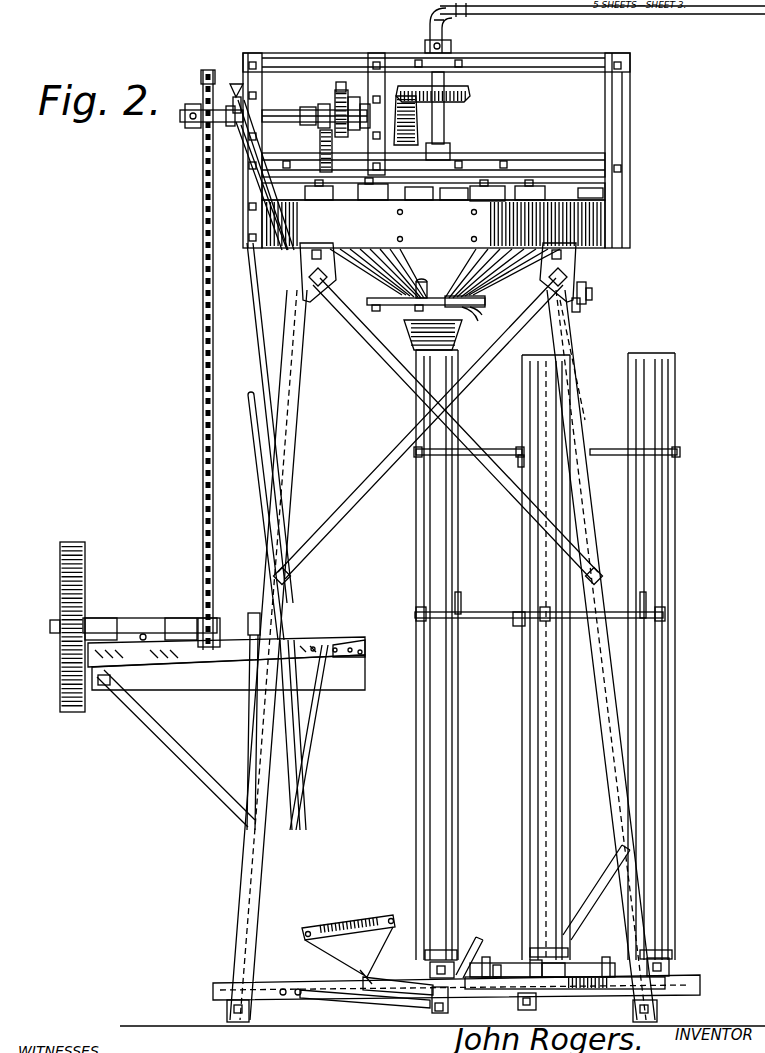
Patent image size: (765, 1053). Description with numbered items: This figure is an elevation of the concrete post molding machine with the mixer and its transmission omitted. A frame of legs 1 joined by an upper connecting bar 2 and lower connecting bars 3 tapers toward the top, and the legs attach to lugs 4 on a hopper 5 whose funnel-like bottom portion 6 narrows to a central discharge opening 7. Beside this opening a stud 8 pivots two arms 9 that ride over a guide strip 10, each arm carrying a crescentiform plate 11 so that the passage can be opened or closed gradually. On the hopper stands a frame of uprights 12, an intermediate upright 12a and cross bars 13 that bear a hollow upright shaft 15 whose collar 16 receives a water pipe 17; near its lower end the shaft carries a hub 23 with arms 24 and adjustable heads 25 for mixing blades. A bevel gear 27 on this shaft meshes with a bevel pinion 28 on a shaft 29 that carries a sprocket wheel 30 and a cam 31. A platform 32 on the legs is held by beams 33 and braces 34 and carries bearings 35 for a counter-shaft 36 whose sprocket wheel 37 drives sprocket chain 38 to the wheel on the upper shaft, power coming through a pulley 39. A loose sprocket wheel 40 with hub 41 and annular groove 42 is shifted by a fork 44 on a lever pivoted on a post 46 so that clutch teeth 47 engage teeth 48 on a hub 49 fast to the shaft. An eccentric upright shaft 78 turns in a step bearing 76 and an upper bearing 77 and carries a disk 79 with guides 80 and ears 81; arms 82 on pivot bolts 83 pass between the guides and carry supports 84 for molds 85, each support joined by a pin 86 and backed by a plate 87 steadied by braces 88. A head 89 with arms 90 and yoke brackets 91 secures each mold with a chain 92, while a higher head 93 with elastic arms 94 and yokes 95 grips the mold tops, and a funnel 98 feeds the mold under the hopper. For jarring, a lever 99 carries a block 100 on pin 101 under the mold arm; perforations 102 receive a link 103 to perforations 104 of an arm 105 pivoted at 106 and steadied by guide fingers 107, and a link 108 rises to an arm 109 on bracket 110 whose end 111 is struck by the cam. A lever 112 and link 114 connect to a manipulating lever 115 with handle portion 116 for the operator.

The legs 1 is at (250, 897).
The connecting bar 2 is at (592, 292).
The connecting bar 3 is at (337, 1013).
The lugs 4 is at (438, 263).
The hopper 5 is at (433, 224).
The bottom portion 6 is at (445, 273).
The central discharge opening 7 is at (437, 297).
The stud 8 is at (485, 301).
The arms 9 is at (396, 319).
The guide strip 10 is at (438, 431).
The crescentiform plate 11 is at (480, 322).
The uprights 12 is at (251, 60).
The intermediate upright 12a is at (376, 60).
The cross bars 13 is at (549, 62).
The upright shaft 15 is at (445, 127).
The collar 16 is at (452, 47).
The pipe 17 is at (612, 16).
The hub 23 is at (448, 207).
The arms 24 is at (345, 190).
The heads 25 is at (325, 198).
The bevel gear 27 is at (470, 98).
The bevel pinion 28 is at (408, 126).
The shaft 29 is at (186, 112).
The sprocket wheel 30 is at (203, 74).
The cam 31 is at (235, 138).
The platform 32 is at (173, 665).
The bars or beams 33 is at (210, 681).
The braces 34 is at (200, 787).
The bearings 35 is at (177, 620).
The counter-shaft 36 is at (50, 627).
The sprocket wheel 37 is at (213, 620).
The sprocket chain 38 is at (203, 498).
The pulley 39 is at (68, 593).
The sprocket wheel 40 is at (338, 82).
The hub 41 is at (322, 116).
The annular groove 42 is at (310, 124).
The fork 44 is at (323, 104).
The post 46 is at (319, 148).
The clutch teeth 47 is at (346, 108).
The clutch teeth 48 is at (354, 126).
The hub 49 is at (368, 108).
The step bearing 76 is at (552, 1004).
The bearing 77 is at (580, 304).
The upright shaft 78 is at (560, 338).
The disk 79 is at (678, 990).
The guides 80 is at (544, 953).
The ears 81 is at (563, 960).
The arm 82 is at (495, 965).
The pivot pin or bolt 83 is at (532, 963).
The support 84 is at (428, 953).
The mold 85 is at (420, 740).
The pivot pin or bolt 86 is at (430, 969).
The guide and supporting plate 87 is at (455, 723).
The braces 88 is at (467, 957).
The head 89 is at (518, 626).
The arms 90 is at (487, 612).
The yoke brackets 91 is at (461, 602).
The chain 92 is at (422, 607).
The head 93 is at (514, 465).
The arms 94 is at (500, 449).
The yoke 95 is at (520, 448).
The funnel 98 is at (433, 335).
The lever 99 is at (396, 985).
The block 100 is at (457, 994).
The bolt or pin 101 is at (437, 1012).
The perforations 102 is at (296, 983).
The link 103 is at (302, 777).
The perforations 104 is at (333, 647).
The arm 105 is at (322, 643).
The pivot 106 is at (143, 641).
The guide fingers 107 is at (256, 635).
The link 108 is at (262, 346).
The arm 109 is at (226, 123).
The bracket 110 is at (252, 166).
The end 111 is at (231, 89).
The lever 112 is at (349, 955).
The link 114 is at (357, 925).
The manipulating lever 115 is at (296, 740).
The handle portion 116 is at (250, 410).